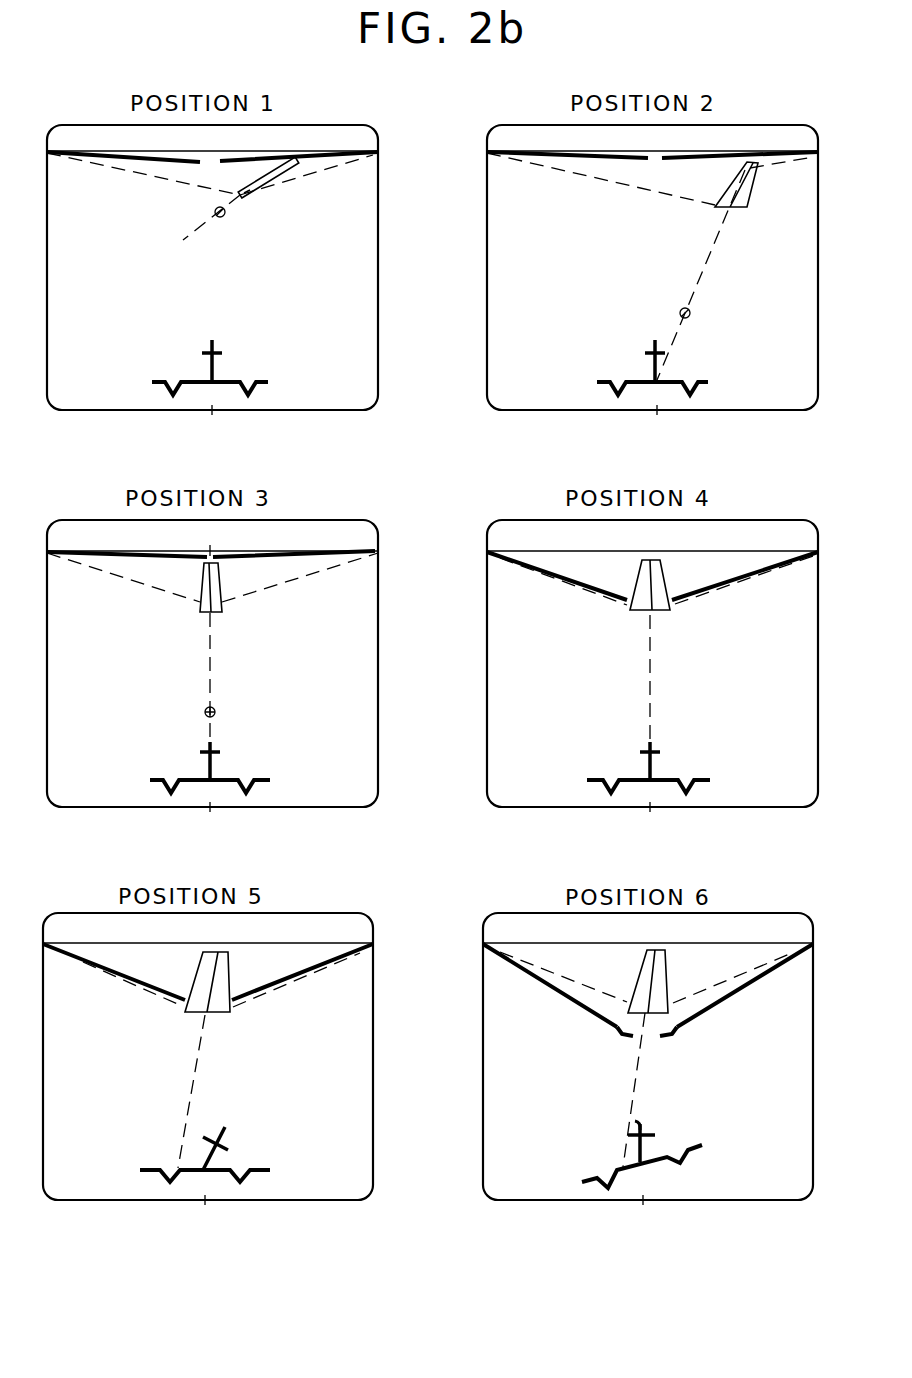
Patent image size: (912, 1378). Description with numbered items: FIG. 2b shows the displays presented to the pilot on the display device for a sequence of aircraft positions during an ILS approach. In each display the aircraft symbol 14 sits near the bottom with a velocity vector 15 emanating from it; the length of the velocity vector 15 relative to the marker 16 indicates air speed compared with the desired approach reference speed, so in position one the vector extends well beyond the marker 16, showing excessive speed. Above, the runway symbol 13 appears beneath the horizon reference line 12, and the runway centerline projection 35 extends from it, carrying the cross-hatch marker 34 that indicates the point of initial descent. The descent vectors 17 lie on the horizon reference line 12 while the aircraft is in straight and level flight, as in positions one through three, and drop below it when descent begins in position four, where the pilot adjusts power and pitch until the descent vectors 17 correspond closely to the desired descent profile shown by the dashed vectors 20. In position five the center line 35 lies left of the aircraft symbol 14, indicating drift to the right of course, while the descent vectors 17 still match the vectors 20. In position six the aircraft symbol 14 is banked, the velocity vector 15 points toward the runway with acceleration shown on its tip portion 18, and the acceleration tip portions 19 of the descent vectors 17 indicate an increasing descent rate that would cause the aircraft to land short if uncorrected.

The horizon reference line 12 is at (176, 151).
The runway symbol 13 is at (288, 168).
The aircraft symbol 14 is at (226, 380).
The velocity vector 15 is at (208, 372).
The marker 16 is at (217, 347).
The descent vector 17 is at (258, 152).
The tip portion 18 is at (640, 1123).
The acceleration tip portions 19 is at (677, 1032).
The descent vectors 20 is at (322, 172).
The cross-hatch marker 34 is at (222, 220).
The runway centerline projection 35 is at (238, 197).